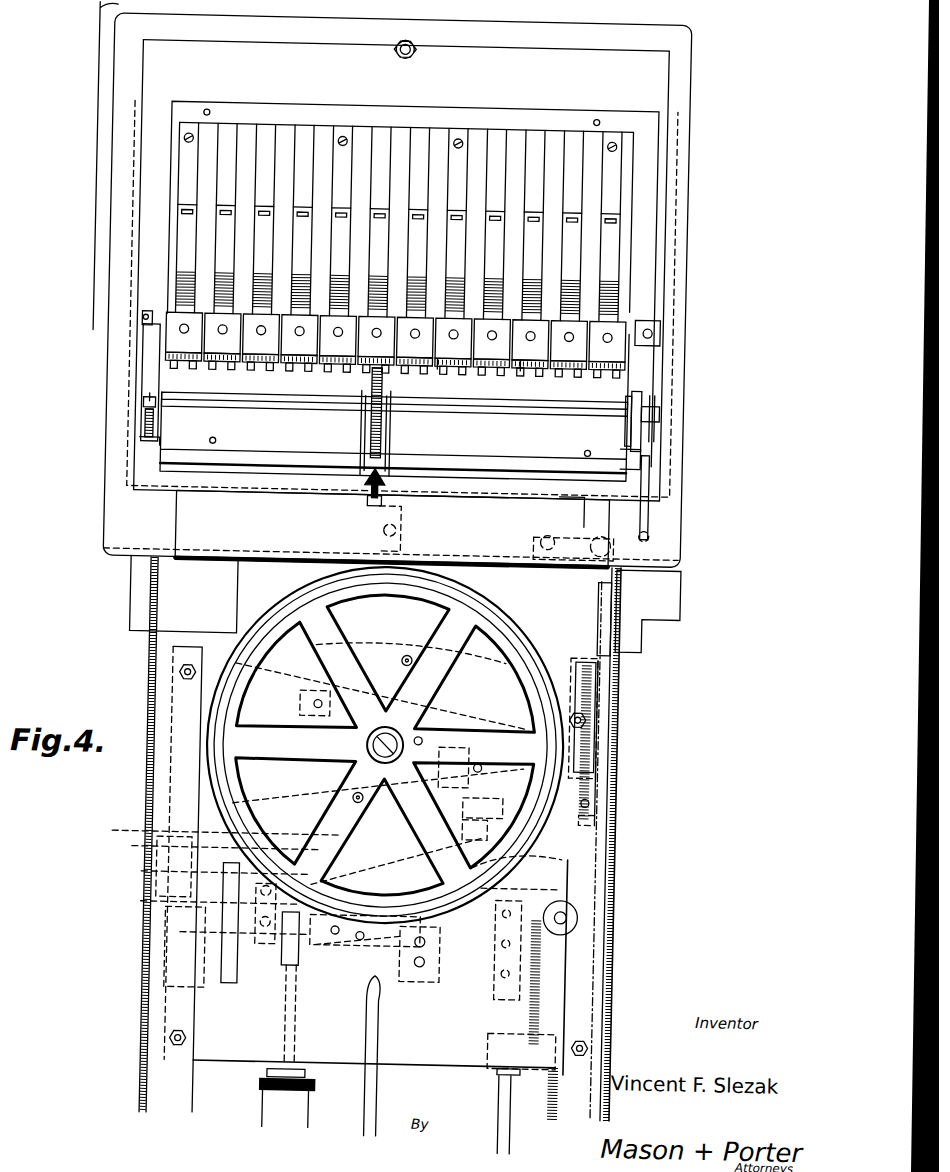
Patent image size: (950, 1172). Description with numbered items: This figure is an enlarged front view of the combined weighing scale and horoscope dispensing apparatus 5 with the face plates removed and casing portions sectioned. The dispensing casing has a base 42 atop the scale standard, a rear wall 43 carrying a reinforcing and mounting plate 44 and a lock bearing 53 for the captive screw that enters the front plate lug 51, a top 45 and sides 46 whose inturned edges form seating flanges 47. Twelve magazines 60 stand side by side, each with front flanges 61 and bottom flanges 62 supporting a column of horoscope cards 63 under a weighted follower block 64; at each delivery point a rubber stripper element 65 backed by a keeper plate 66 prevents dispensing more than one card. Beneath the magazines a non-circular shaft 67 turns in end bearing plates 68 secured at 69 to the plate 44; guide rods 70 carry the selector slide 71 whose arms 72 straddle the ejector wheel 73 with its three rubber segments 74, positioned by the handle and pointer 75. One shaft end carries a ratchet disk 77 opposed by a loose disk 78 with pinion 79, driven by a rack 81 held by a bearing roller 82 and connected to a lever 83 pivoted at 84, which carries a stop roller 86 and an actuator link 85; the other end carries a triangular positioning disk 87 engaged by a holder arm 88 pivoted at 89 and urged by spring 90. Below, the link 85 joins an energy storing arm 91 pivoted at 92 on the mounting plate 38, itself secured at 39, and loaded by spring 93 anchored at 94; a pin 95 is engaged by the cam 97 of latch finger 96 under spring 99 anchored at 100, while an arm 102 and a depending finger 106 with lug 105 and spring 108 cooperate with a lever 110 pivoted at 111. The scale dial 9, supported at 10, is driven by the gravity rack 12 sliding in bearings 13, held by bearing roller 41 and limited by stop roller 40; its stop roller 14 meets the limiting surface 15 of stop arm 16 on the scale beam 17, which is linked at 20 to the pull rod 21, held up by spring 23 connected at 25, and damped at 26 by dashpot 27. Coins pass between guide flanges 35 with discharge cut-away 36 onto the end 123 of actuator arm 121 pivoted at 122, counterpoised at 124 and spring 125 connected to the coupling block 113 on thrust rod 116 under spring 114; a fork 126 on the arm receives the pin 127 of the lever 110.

The horoscope dispensing apparatus 5 is at (700, 159).
The top 45 is at (118, 20).
The rear wall 43 is at (656, 75).
The reinforcing and mounting plate 44 is at (657, 98).
The sides 46 is at (118, 130).
The horoscope dispensing magazines 60 is at (362, 115).
The front flanges 61 is at (278, 136).
The weighted follower block 64 is at (193, 226).
The horoscope cards or slips 63 is at (196, 288).
The securing means for bearing plates 69 is at (157, 317).
The end bearing plates 68 is at (128, 420).
The bottom flanges 62 is at (473, 354).
The keeper plate 66 is at (452, 353).
The yieldable stripper or retainer element 65 is at (528, 353).
The non-circular shaft 67 is at (248, 397).
The guide rods 70 is at (245, 452).
The rubber ejector segments 74 is at (368, 380).
The spaced arms 72 is at (369, 435).
The ejector wheel 73 is at (402, 434).
The magazine selector slide 71 is at (363, 457).
The handle and magazine selecting pointer 75 is at (430, 483).
The pivot of holder arm 89 is at (155, 337).
The holder arm 88 is at (158, 364).
The equilateral triangular positioning disk 87 is at (157, 417).
The spring 90 is at (159, 444).
The seating flanges 47 is at (151, 439).
The ratchet disk 78 is at (649, 423).
The bearing roller 82 is at (659, 403).
The pinion extension 79 is at (663, 388).
The rack member 81 is at (660, 383).
The ratchet disk 77 is at (644, 419).
The base 42 is at (237, 550).
The pivot of energy storing arm 92 is at (330, 555).
The lever pivot 84 is at (401, 529).
The lever 83 is at (511, 519).
The stop roller 86 is at (601, 528).
The actuator link 85 is at (667, 558).
The securing means for mounting plate 39 is at (199, 670).
The actuator pin 95 is at (654, 628).
The cam portion 97 is at (624, 659).
The latch finger 96 is at (620, 674).
The energy storing spring 93 is at (611, 749).
The spring 99 is at (617, 764).
The spring anchor 94 is at (612, 789).
The spring anchor 100 is at (617, 809).
The scale dial or rotor 9 is at (563, 830).
The energy storing arm 91 is at (491, 617).
The rotatable support of dial 10 is at (495, 712).
The bearing roller 41 is at (444, 741).
The gravity rack 12 is at (410, 680).
The bearings 13 is at (492, 784).
The stop arm 16 is at (418, 840).
The stop roller 14 is at (372, 785).
The arm 102 is at (380, 716).
The spring 108 is at (499, 657).
The stop roller 40 is at (421, 651).
The limiting surface 15 is at (378, 824).
The latch finger 106 is at (515, 679).
The latch lug 105 is at (516, 763).
The lever pivot 111 is at (512, 800).
The lever 110 is at (508, 814).
The actuator arm 121 is at (459, 885).
The spring 23 is at (188, 819).
The free end of actuator arm 123 is at (199, 878).
The lateral guide flanges 35 is at (205, 913).
The cut-away portion 36 is at (200, 938).
The knife edge and stirrup connection 25 is at (295, 936).
The scale beam 17 is at (348, 943).
The dashpot connection 26 is at (316, 1051).
The knife edge and stirrup connection 20 is at (435, 948).
The pull rod 21 is at (402, 1027).
The mounting plate 38 is at (253, 1067).
The dashpot equipment 27 is at (287, 1094).
The coupling block 113 is at (513, 1062).
The thrust rod 116 is at (524, 1091).
The spring 114 is at (535, 1108).
The actuator arm pivot 122 is at (526, 981).
The counterpoise 124 is at (598, 908).
The spring 125 is at (566, 990).
The fork 126 is at (619, 877).
The pin 127 is at (618, 851).
The internally threaded lug 51 is at (403, 44).
The lock bearing 53 is at (421, 45).